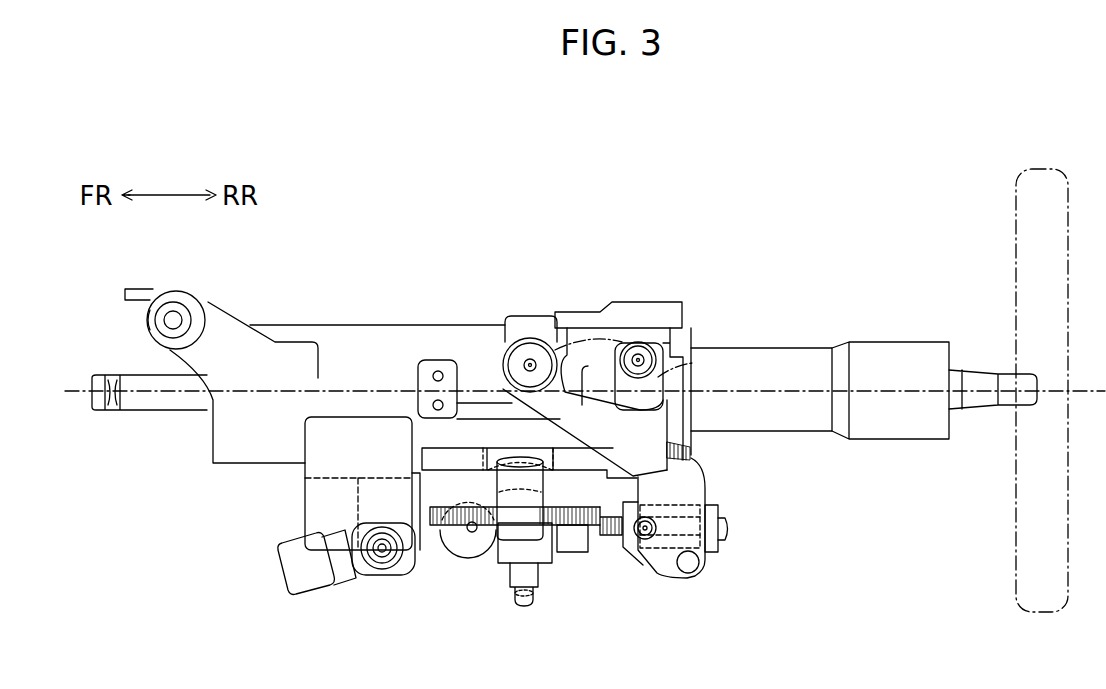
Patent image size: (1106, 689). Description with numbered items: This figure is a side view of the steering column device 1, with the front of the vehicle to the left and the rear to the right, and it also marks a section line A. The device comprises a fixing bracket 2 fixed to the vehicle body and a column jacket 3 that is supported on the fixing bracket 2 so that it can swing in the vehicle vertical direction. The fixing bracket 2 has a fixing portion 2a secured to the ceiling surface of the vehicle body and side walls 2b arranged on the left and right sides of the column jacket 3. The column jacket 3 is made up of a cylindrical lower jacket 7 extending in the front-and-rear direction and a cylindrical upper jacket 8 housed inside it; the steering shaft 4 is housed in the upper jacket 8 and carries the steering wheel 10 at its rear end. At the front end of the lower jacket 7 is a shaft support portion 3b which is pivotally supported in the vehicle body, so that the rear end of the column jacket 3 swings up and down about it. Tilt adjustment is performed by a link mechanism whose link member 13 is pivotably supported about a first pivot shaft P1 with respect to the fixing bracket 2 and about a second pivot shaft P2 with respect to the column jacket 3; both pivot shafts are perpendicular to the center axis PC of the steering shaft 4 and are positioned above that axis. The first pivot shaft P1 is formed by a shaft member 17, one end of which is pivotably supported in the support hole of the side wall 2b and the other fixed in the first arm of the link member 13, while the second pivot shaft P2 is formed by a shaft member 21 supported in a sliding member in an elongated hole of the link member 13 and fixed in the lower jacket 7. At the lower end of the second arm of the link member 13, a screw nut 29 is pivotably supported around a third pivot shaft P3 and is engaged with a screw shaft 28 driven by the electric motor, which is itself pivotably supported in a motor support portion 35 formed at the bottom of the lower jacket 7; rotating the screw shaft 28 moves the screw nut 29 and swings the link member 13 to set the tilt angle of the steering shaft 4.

The steering column device 1 is at (777, 281).
The fixing bracket 2 is at (624, 356).
The fixing portion 2a is at (587, 323).
The side walls 2b is at (645, 404).
The column jacket 3 is at (363, 323).
The shaft support portion 3b is at (157, 313).
The steering shaft 4 is at (977, 402).
The lower jacket 7 is at (238, 455).
The upper jacket 8 is at (903, 353).
The steering wheel 10 is at (1020, 242).
The link member 13 is at (700, 478).
The shaft member 17 is at (640, 343).
The shaft member 21 is at (507, 330).
The screw shaft 28 is at (600, 540).
The screw nut 29 is at (675, 575).
The motor support portion 35 is at (468, 545).
The first pivot shaft P1 is at (684, 363).
The second pivot shaft P2 is at (505, 360).
The third pivot shaft P3 is at (645, 541).
The center axis PC is at (801, 395).
The section line A- A is at (530, 295).